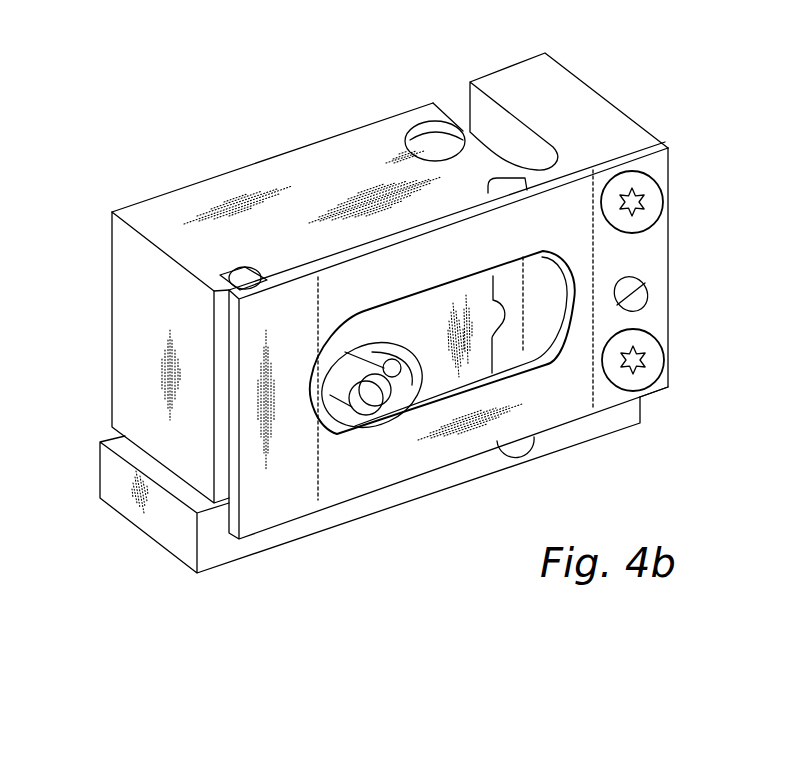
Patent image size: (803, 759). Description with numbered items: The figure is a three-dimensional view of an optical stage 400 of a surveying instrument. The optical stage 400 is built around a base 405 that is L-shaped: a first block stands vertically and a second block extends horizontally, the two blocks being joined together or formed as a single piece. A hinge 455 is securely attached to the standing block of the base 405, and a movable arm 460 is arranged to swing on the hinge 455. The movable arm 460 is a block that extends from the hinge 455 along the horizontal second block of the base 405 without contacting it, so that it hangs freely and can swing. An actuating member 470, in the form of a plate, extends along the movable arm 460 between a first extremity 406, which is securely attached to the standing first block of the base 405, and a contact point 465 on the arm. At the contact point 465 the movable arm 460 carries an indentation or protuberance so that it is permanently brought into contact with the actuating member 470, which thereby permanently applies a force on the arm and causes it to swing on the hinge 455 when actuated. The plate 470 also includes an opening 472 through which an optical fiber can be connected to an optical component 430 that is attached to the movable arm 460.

The optical stage 400 is at (381, 325).
The base 405 is at (597, 103).
The first extremity 406 is at (670, 248).
The optical component 430 is at (381, 398).
The hinge 455 is at (565, 166).
The movable arm 460 is at (133, 345).
The contact point 465 is at (242, 272).
The actuating member 470 is at (263, 517).
The opening 472 is at (522, 350).